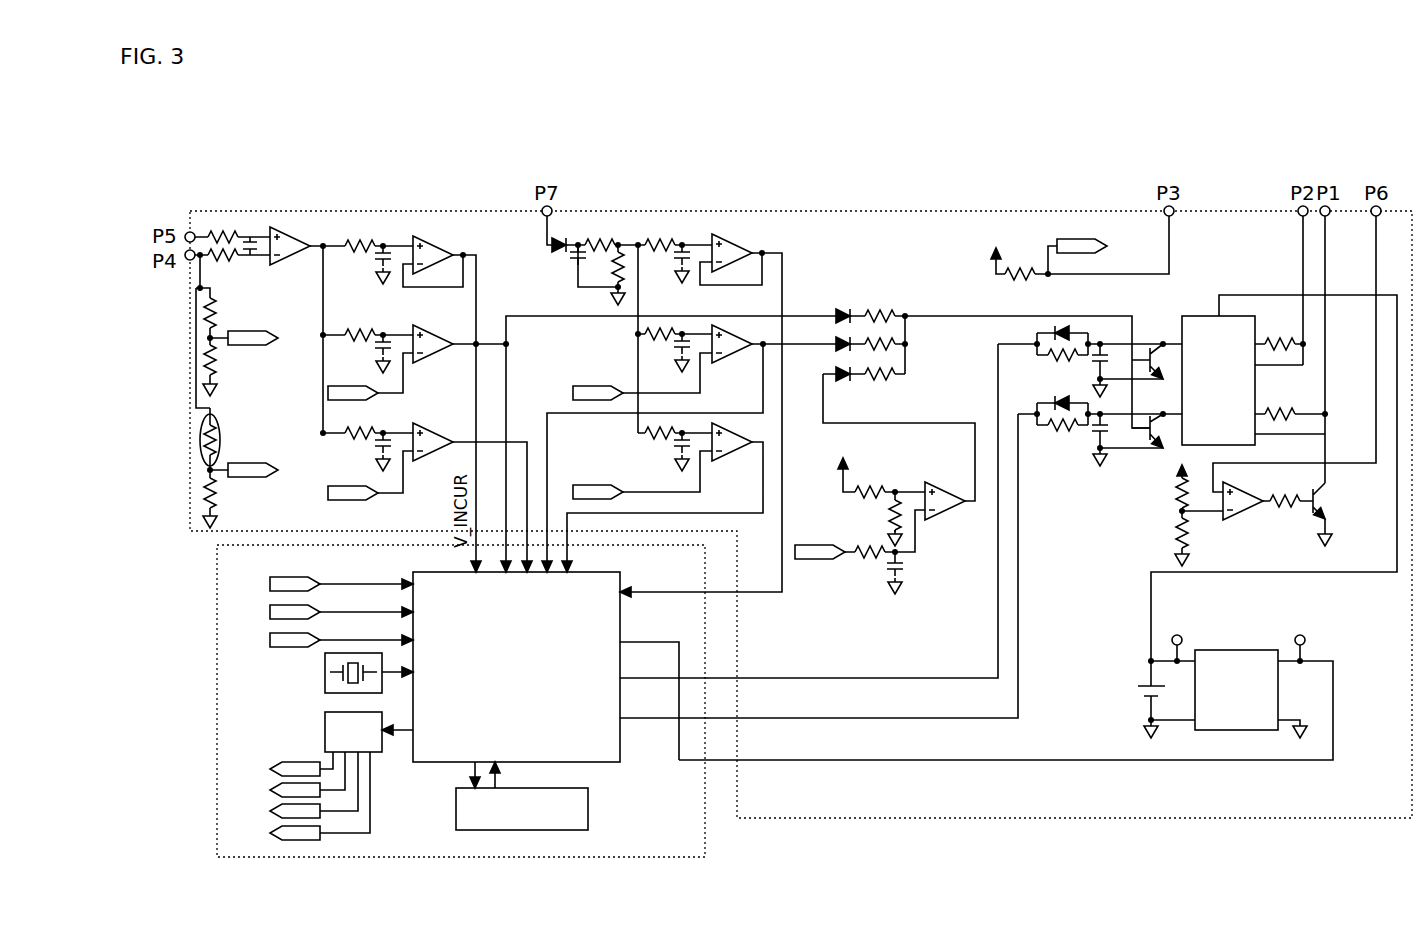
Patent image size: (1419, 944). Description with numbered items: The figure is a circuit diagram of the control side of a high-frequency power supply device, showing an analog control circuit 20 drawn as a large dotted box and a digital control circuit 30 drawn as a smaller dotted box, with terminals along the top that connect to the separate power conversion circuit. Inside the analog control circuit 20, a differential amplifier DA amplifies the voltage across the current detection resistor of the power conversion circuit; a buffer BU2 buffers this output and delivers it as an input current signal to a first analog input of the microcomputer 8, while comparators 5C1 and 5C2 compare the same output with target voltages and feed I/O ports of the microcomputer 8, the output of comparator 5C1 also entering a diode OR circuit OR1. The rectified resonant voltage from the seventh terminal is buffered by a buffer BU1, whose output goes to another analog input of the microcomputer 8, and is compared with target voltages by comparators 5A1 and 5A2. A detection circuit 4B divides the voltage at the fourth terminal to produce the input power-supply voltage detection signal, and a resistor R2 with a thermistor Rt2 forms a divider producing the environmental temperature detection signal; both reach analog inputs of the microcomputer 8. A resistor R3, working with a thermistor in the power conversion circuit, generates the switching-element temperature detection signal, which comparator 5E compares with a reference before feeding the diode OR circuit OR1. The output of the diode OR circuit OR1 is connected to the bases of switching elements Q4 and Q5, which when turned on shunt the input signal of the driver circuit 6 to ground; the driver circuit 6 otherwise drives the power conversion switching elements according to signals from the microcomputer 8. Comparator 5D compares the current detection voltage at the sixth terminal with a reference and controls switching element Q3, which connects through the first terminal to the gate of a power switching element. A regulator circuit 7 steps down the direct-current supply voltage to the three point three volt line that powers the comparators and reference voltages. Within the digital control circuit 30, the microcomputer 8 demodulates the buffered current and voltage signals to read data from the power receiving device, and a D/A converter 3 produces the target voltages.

The D/A converter 3 is at (325, 733).
The detection circuit 4B is at (228, 370).
The driver circuit 6 is at (1200, 316).
The regulator circuit 7 is at (1232, 650).
The microcomputer 8 is at (620, 762).
The analog control circuit 20 is at (1080, 818).
The digital control circuit 30 is at (217, 712).
The comparator 5A1 is at (736, 360).
The comparator 5A2 is at (736, 460).
The comparator 5C1 is at (426, 336).
The comparator 5C2 is at (426, 434).
The comparator 5D is at (1243, 520).
The comparator 5E is at (945, 520).
The differential amplifier DA is at (290, 265).
The buffer BU1 is at (724, 246).
The buffer BU2 is at (426, 246).
The diode OR circuit OR1 is at (902, 383).
The switching element Q3 is at (1308, 514).
The switching element Q4 is at (1090, 359).
The switching element Q5 is at (1100, 429).
The resistor R2 is at (252, 487).
The resistor R3 is at (1080, 259).
The thermistor Rt2 is at (225, 439).